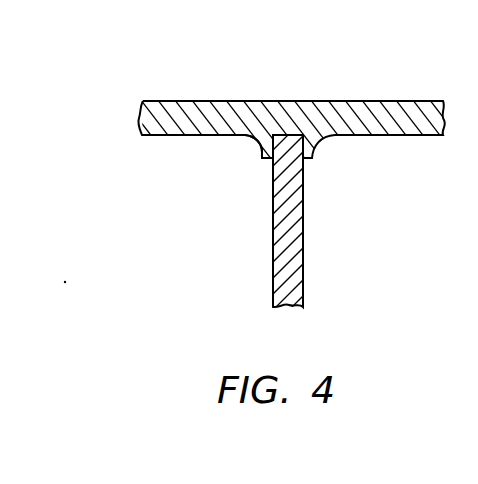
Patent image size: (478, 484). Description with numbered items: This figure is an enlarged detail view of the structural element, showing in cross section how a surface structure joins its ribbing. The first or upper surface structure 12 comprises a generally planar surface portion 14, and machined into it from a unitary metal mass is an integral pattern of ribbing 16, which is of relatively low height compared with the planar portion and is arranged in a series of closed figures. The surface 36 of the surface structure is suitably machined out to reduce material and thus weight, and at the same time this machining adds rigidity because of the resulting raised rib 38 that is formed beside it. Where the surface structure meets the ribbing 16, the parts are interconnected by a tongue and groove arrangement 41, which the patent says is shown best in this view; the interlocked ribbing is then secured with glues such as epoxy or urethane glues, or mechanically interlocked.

The first or upper surface structure 12 is at (391, 101).
The generally planar surface portion 14 is at (398, 127).
The integral pattern of ribbing 16 is at (307, 160).
The surface 36 is at (195, 136).
The raised rib 38 is at (252, 135).
The tongue and groove arrangement 41 is at (269, 161).